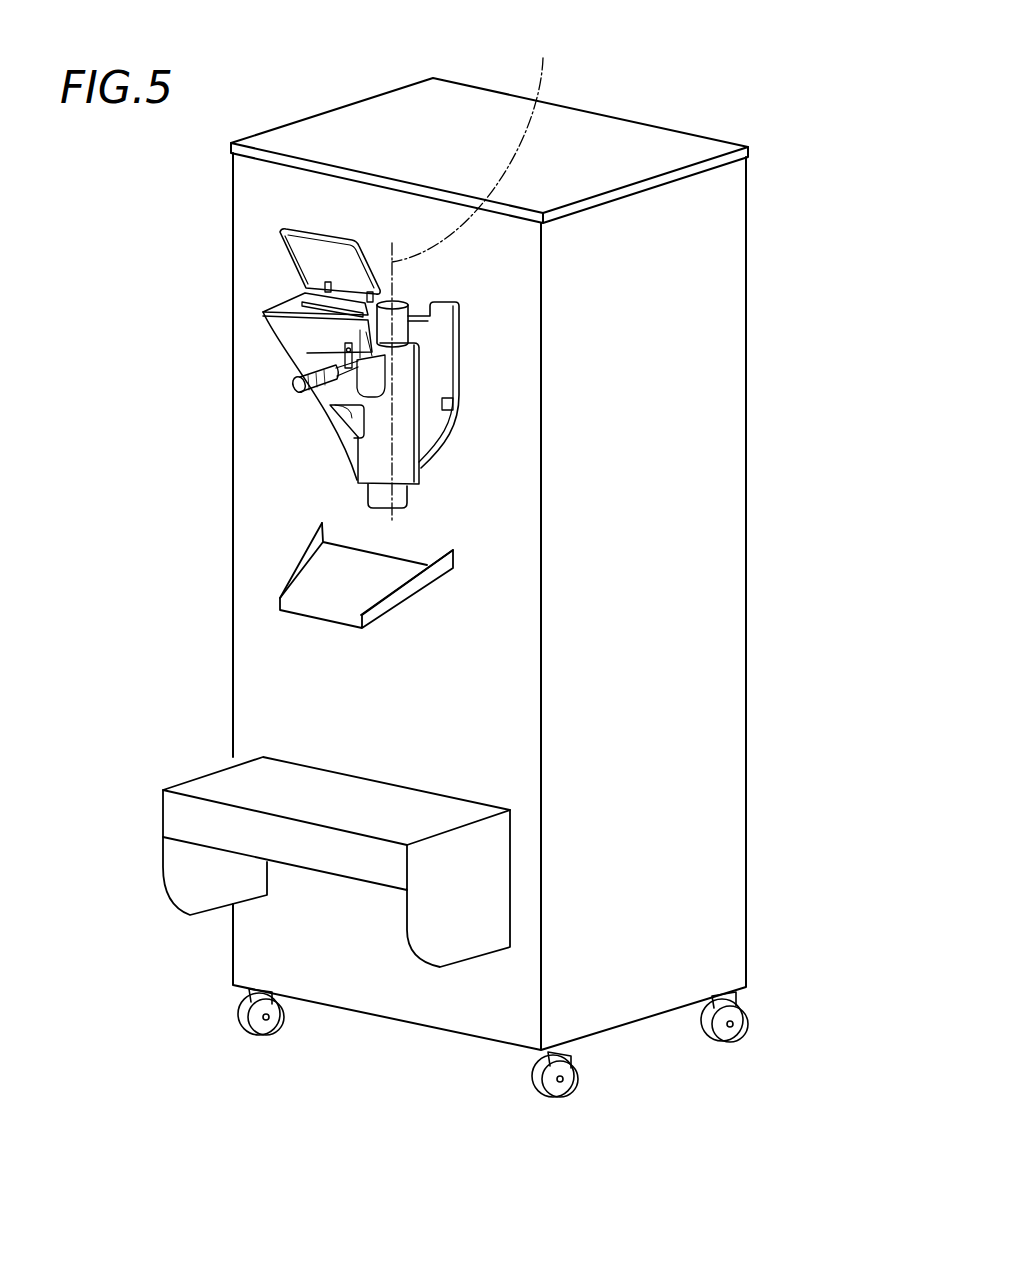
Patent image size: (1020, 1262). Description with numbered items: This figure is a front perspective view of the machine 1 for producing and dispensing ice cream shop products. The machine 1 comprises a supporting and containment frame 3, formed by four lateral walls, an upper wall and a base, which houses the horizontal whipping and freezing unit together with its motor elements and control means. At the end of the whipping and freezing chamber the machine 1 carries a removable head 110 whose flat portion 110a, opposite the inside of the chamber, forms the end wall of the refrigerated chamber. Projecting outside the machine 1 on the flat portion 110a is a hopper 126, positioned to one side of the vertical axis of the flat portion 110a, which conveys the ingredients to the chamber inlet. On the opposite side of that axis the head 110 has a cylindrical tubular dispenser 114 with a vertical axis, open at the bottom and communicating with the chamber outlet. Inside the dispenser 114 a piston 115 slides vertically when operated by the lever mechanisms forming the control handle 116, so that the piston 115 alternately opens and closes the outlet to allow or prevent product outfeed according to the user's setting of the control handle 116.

The machine 1 is at (720, 110).
The supporting and containment frame 3 is at (746, 713).
The removable head 110 is at (313, 432).
The flat portion 110a is at (445, 454).
The cylindrical tubular dispenser 114 is at (413, 485).
The piston 115 is at (400, 332).
The control handle 116 is at (293, 380).
The hopper 126 is at (267, 313).